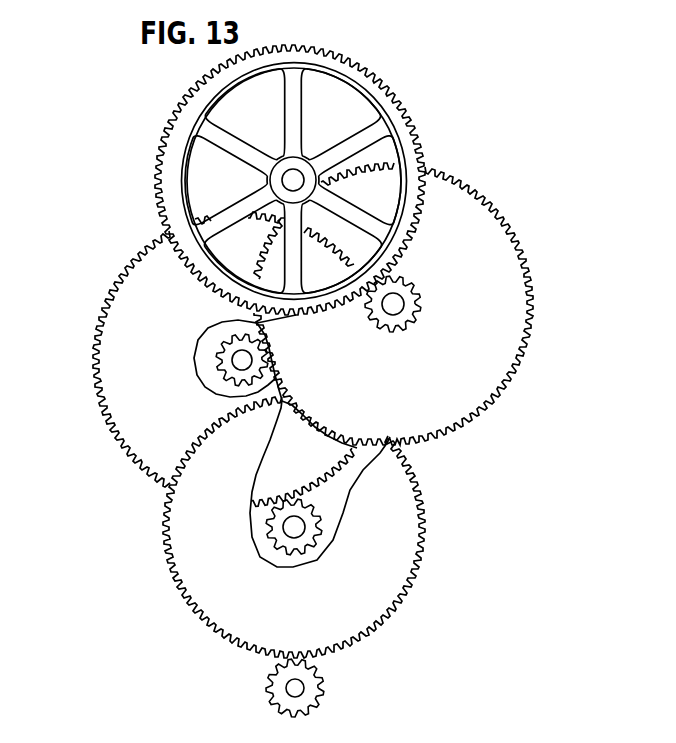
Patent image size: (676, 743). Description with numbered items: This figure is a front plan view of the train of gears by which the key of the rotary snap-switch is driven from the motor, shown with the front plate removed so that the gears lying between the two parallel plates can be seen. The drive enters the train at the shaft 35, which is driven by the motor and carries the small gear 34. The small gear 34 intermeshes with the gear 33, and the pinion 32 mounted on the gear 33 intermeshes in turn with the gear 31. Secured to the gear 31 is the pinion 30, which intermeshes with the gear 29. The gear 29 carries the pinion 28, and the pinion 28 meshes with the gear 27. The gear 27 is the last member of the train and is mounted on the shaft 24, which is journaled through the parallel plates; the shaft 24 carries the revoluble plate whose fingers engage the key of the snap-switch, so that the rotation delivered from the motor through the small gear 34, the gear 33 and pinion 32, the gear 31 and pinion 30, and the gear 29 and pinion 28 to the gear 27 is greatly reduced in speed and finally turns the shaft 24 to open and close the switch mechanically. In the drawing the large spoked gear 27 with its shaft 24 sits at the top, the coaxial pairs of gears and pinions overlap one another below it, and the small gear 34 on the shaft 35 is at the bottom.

The gear 27 is at (390, 110).
The shaft 24 is at (297, 178).
The gear 29 is at (518, 317).
The pinion 28 is at (407, 318).
The gear 31 is at (113, 343).
The pinion 30 is at (229, 367).
The gear 33 is at (415, 518).
The pinion 32 is at (313, 528).
The small gear 34 is at (315, 680).
The shaft 35 is at (288, 689).